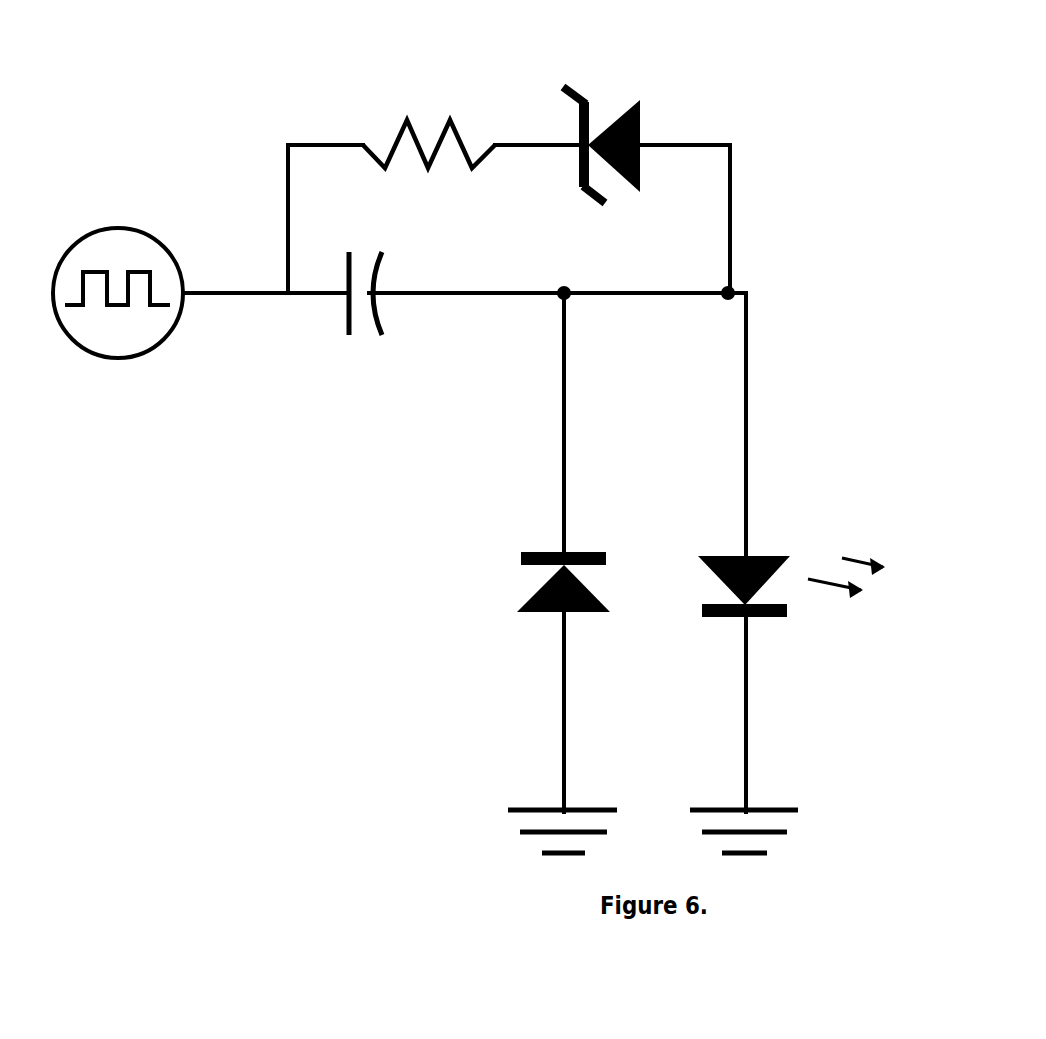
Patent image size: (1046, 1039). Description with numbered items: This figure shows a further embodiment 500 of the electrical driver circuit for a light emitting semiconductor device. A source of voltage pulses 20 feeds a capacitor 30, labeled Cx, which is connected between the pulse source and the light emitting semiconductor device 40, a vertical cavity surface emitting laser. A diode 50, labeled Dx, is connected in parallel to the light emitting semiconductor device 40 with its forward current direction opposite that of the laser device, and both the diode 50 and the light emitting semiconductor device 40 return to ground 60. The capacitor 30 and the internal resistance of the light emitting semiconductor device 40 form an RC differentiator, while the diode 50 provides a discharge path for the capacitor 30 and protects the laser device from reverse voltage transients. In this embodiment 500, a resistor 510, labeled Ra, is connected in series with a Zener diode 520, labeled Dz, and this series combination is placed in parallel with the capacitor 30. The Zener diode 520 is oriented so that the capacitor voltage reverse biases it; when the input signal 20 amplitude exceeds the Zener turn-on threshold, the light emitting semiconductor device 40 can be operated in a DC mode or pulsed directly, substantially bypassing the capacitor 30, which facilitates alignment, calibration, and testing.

The embodiment of the driver circuit 500 is at (258, 542).
The source of voltage pulses 20 is at (122, 205).
The capacitor 30 is at (327, 342).
The resistor 510 is at (430, 118).
The Zener diode 520 is at (618, 102).
The diode 50 is at (552, 542).
The light emitting semiconductor device 40 is at (772, 543).
The ground 60 is at (498, 812).